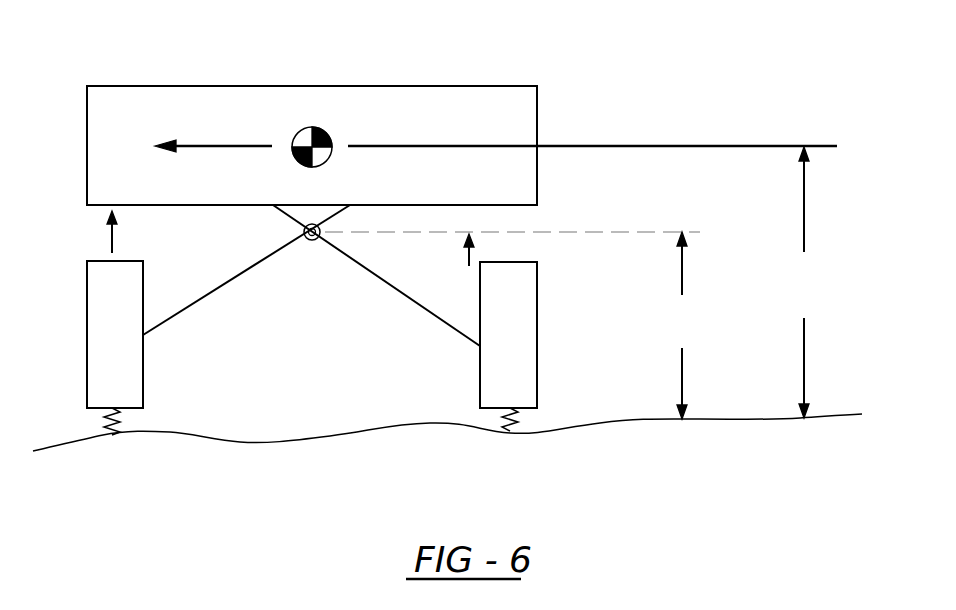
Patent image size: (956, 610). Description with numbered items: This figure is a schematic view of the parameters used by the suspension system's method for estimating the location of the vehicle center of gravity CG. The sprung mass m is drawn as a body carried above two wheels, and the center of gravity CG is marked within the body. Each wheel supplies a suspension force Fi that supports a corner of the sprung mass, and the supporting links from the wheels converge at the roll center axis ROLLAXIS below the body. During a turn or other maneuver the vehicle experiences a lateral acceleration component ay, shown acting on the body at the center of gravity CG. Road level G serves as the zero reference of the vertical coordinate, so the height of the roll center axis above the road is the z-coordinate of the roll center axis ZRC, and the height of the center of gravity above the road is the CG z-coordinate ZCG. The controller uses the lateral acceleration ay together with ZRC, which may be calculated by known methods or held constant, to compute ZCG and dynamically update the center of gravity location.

The vehicle center of gravity CG is at (306, 128).
The sprung mass m is at (346, 162).
The lateral acceleration component ay is at (213, 134).
The suspension force Fi is at (290, 246).
The roll center axis ROLLAXIS is at (312, 241).
The road level G is at (275, 481).
The z-coordinate of the roll center axis ZRC is at (685, 325).
The CG z-coordinate ZCG is at (808, 282).